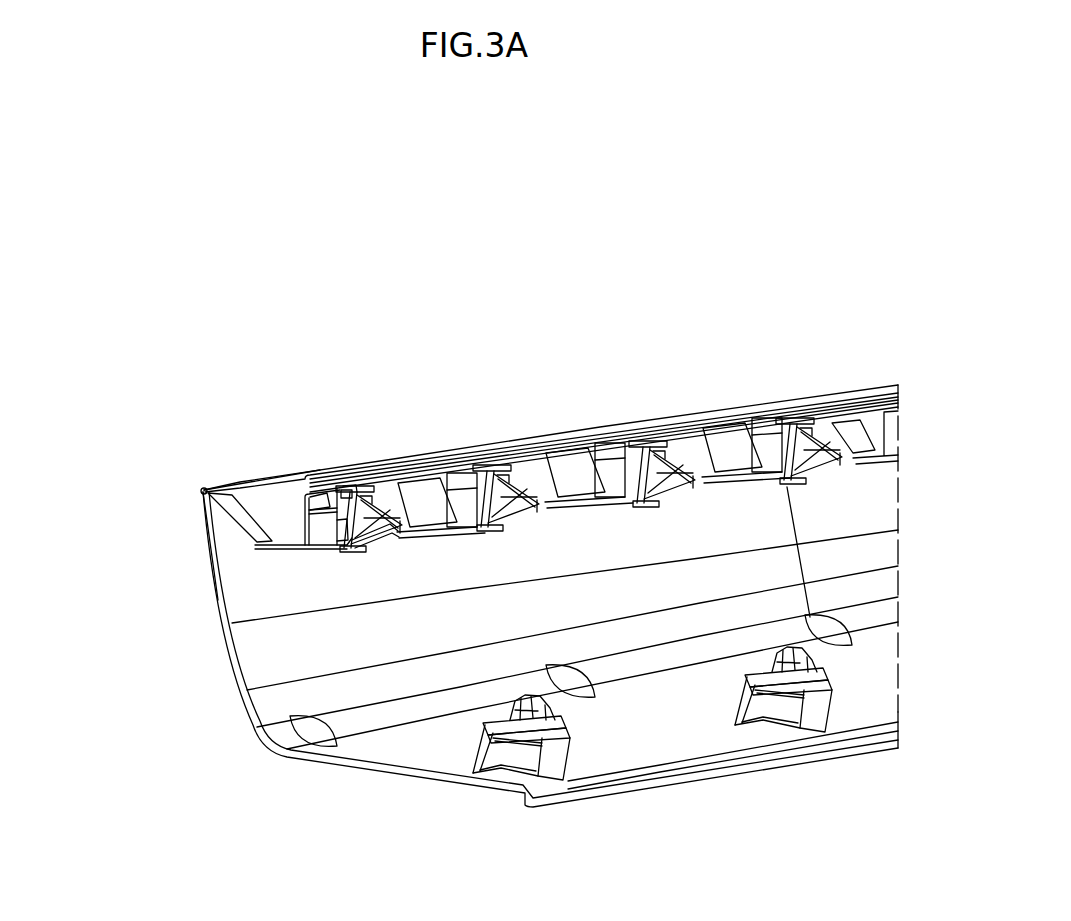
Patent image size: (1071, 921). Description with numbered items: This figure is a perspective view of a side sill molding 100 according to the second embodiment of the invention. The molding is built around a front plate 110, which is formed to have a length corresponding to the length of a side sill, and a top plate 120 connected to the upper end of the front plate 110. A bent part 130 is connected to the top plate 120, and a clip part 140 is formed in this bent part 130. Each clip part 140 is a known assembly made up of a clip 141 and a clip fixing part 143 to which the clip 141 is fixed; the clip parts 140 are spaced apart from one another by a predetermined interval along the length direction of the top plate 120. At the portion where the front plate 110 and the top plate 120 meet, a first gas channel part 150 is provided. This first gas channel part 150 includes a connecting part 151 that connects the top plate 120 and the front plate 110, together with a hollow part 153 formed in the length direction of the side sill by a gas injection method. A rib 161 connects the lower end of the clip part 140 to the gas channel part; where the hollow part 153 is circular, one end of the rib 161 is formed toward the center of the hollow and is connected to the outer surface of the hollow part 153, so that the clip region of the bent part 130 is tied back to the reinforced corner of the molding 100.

The side sill molding 100 is at (120, 237).
The front plate 110 is at (226, 621).
The top plate 120 is at (262, 488).
The bent part 130 is at (308, 488).
The clip part 140 is at (366, 506).
The clip 141 is at (388, 527).
The clip fixing part 143 is at (345, 498).
The first gas channel part 150 is at (192, 489).
The connecting part 151 is at (202, 489).
The hollow part 153 is at (204, 489).
The rib 161 is at (237, 534).